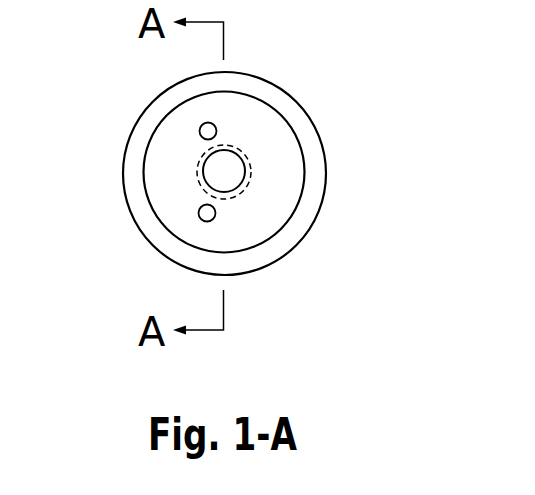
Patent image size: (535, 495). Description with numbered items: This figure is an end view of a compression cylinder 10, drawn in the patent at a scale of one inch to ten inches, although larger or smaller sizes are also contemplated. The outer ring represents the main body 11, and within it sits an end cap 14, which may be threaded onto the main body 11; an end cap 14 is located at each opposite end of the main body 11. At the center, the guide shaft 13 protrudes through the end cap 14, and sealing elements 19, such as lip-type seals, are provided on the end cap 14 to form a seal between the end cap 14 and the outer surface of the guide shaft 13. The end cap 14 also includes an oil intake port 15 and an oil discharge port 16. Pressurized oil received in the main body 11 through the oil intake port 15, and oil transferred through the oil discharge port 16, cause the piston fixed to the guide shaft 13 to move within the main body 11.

The compression cylinder 10 is at (380, 72).
The main body 11 is at (275, 98).
The guide shaft 13 is at (235, 167).
The end cap 14 is at (168, 180).
The oil intake port 15 is at (200, 130).
The oil discharge port 16 is at (198, 213).
The sealing elements 19 is at (240, 193).